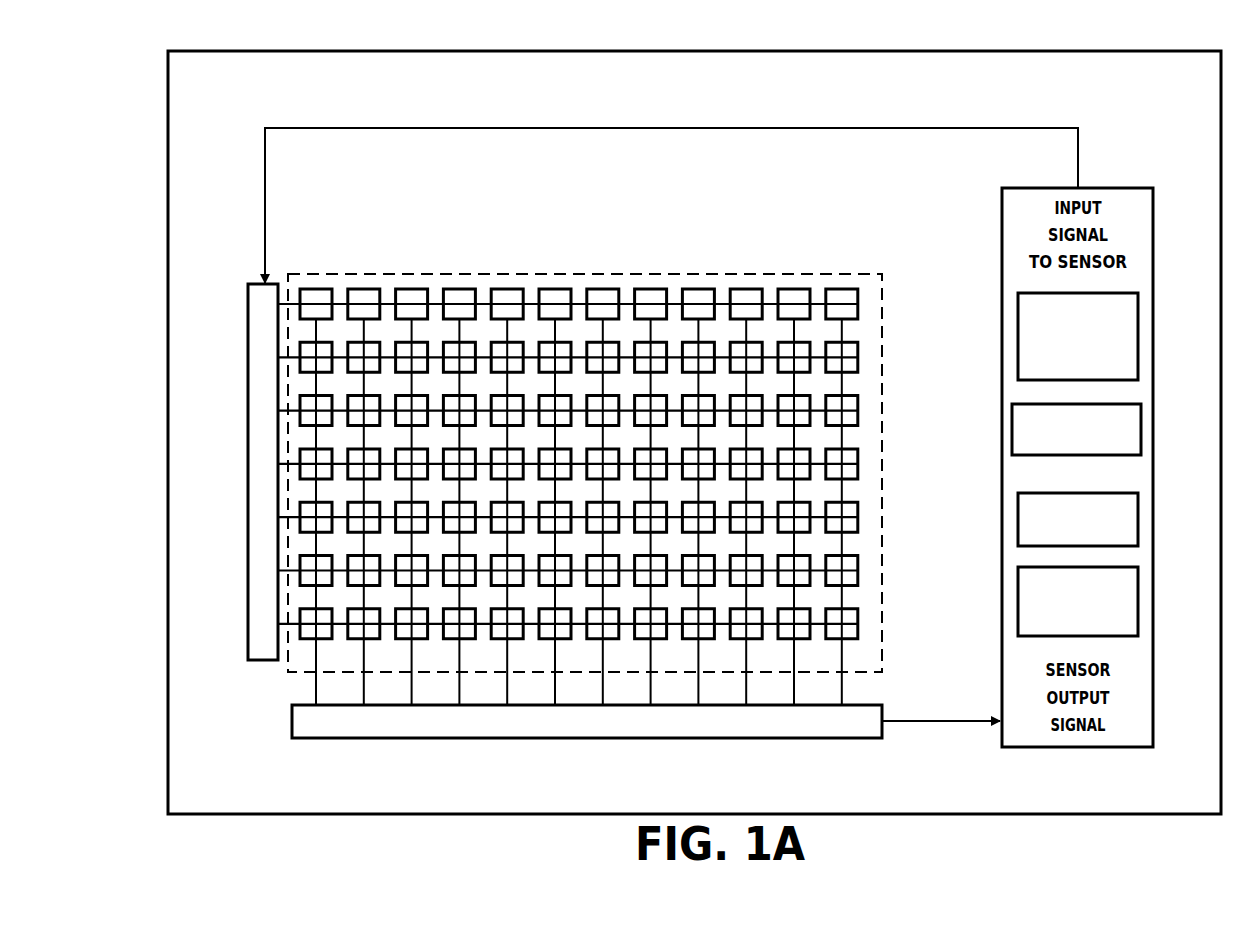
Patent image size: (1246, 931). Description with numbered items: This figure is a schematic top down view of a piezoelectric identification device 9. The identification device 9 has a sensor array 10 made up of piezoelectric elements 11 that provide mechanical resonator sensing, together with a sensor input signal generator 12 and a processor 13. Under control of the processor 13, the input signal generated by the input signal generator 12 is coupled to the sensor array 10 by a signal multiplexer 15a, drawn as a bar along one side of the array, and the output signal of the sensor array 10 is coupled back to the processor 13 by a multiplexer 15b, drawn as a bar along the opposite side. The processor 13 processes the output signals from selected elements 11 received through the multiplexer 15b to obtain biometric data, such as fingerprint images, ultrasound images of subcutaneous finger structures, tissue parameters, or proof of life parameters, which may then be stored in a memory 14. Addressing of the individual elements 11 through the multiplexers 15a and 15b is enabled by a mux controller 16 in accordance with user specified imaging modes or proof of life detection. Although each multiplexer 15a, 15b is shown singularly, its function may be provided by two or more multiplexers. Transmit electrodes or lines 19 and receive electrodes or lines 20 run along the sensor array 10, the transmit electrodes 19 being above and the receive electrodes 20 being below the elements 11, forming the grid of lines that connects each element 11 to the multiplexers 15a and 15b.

The piezoelectric identification device 9 is at (358, 50).
The sensor array 10 is at (288, 672).
The piezoelectric element 11 is at (739, 290).
The sensor input signal generator 12 is at (1138, 333).
The processor 13 is at (1138, 596).
The memory 14 is at (1138, 520).
The signal multiplexer 15a is at (248, 435).
The multiplexer 15b is at (690, 738).
The mux controller 16 is at (1141, 436).
The transmit electrodes 19 is at (287, 312).
The receive electrodes 20 is at (842, 682).